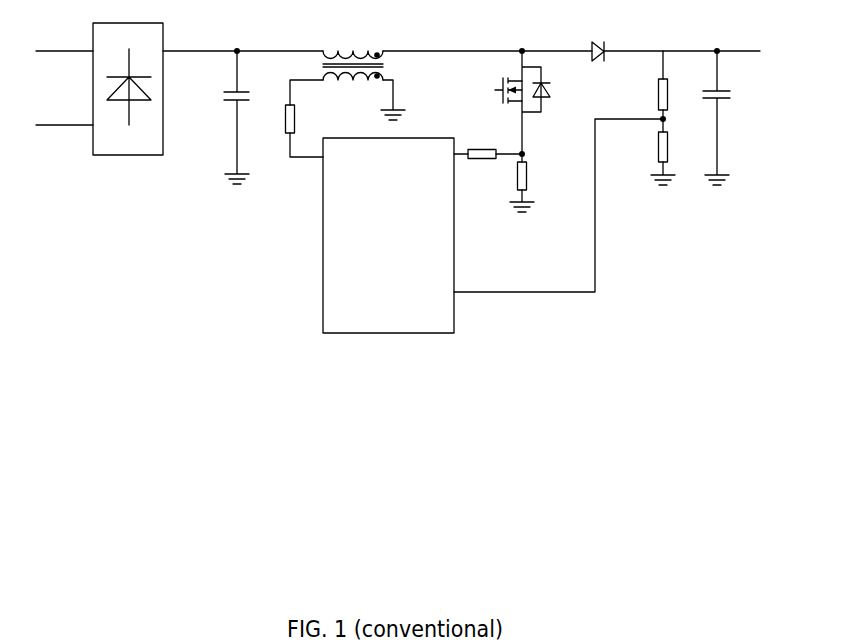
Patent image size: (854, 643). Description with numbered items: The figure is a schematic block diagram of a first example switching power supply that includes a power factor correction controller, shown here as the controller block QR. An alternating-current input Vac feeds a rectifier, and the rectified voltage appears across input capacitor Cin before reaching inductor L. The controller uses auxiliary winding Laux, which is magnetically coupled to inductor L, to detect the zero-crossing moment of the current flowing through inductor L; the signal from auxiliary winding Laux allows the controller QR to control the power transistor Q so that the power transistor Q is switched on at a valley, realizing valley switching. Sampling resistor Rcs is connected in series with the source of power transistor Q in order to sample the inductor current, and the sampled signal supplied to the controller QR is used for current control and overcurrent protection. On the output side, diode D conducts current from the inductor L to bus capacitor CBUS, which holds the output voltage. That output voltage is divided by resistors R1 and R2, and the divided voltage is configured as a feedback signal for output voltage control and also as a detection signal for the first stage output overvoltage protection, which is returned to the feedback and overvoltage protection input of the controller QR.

The AC input voltage source Vac is at (60, 92).
The input capacitor Cin is at (216, 116).
The inductor L is at (353, 39).
The auxiliary winding Laux is at (346, 115).
The quasi-resonant controller QR is at (493, 226).
The power transistor Q is at (536, 105).
The sampling resistor Rcs is at (538, 181).
The output diode D is at (597, 38).
The feedback divider resistor R1 is at (648, 91).
The feedback divider resistor R2 is at (651, 158).
The bus capacitor CBUS is at (743, 116).